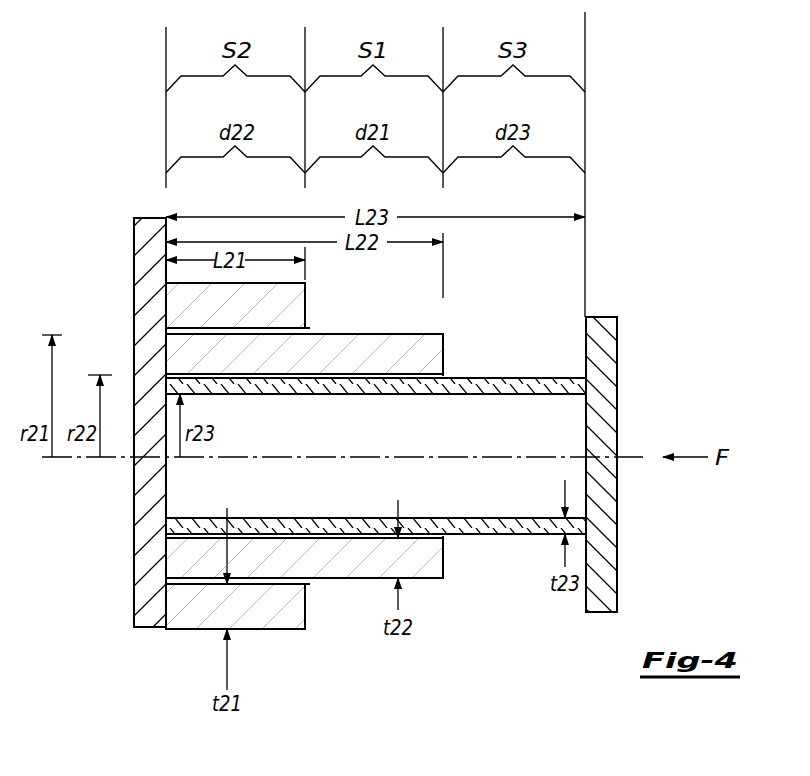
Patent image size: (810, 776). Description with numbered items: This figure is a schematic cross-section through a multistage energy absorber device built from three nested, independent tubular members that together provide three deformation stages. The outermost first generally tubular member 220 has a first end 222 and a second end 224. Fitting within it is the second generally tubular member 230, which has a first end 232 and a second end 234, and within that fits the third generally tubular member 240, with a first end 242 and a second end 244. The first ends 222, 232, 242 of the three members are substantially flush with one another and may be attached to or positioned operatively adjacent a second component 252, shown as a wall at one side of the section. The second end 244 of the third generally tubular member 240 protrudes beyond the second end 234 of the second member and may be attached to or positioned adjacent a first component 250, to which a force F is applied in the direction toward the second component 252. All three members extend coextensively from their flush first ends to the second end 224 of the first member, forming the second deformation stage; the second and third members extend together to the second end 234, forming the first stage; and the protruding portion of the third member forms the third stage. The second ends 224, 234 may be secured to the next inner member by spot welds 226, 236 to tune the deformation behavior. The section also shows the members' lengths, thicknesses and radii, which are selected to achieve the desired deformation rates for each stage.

The first generally tubular member 220 is at (313, 292).
The first end of the first generally tubular member 222 is at (164, 318).
The second end of the first generally tubular member 224 is at (308, 308).
The spot weld 226 is at (308, 329).
The second generally tubular member 230 is at (405, 333).
The first end of the second generally tubular member 232 is at (164, 358).
The second end of the second generally tubular member 234 is at (446, 343).
The spot weld 236 is at (446, 373).
The third generally tubular member 240 is at (538, 377).
The first end of the third generally tubular member 242 is at (164, 387).
The second end of the third generally tubular member 244 is at (590, 388).
The first component 250 is at (603, 612).
The second component 252 is at (152, 627).